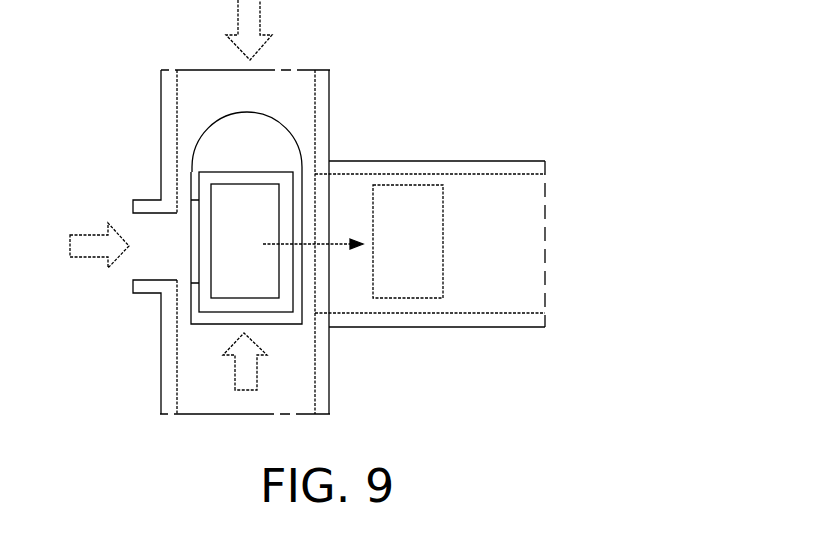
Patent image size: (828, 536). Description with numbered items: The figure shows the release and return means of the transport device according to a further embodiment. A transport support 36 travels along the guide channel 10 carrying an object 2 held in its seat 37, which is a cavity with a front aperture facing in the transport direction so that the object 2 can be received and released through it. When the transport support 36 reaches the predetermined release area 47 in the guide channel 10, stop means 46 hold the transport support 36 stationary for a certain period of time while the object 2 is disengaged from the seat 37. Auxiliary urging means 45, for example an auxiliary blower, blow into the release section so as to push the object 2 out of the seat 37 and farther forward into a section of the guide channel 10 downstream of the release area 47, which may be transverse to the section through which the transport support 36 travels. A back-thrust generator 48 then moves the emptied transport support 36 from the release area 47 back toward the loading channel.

The object 2 is at (252, 257).
The guide channel 10 is at (298, 382).
The transport support 36 is at (212, 150).
The seat 37 is at (253, 172).
The auxiliary urging means 45 is at (97, 243).
The stop means 46 is at (243, 370).
The release area 47 is at (307, 170).
The back-thrust generator 48 is at (253, 20).